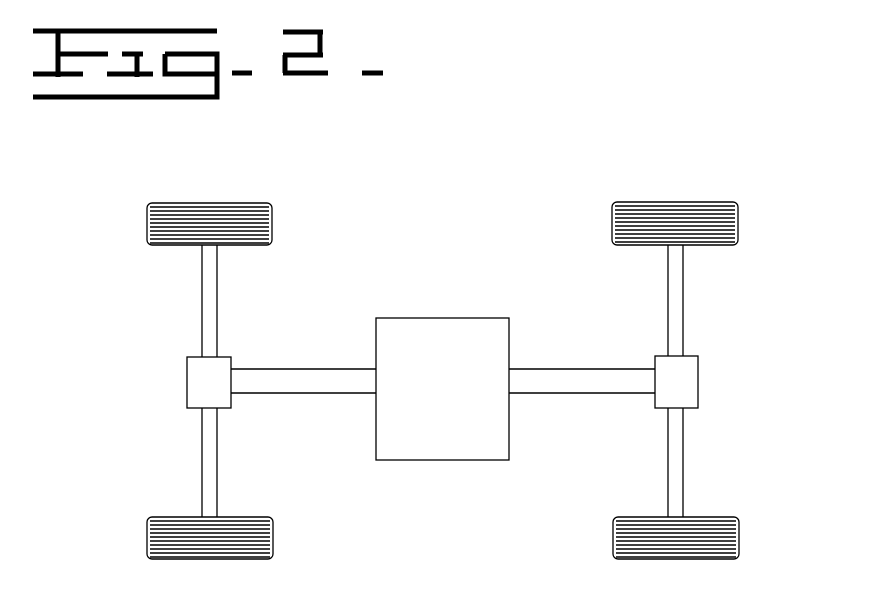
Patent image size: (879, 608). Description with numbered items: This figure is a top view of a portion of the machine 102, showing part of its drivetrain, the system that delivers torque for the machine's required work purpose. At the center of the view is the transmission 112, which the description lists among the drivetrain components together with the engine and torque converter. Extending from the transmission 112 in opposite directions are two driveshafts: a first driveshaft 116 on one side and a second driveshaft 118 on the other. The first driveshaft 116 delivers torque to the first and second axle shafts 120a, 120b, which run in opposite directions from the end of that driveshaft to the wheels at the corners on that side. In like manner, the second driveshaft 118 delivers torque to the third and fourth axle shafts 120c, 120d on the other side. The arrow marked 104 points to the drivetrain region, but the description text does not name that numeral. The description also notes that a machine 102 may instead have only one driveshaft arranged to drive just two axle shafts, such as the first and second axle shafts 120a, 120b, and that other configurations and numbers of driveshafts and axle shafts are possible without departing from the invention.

The machine 102 is at (405, 260).
The drive system 104 is at (482, 250).
The transmission 112 is at (426, 379).
The first driveshaft 116 is at (617, 370).
The second driveshaft 118 is at (306, 370).
The first axle shaft 120a is at (683, 317).
The second axle shaft 120b is at (685, 465).
The third axle shaft 120c is at (203, 330).
The fourth axle shaft 120d is at (203, 472).